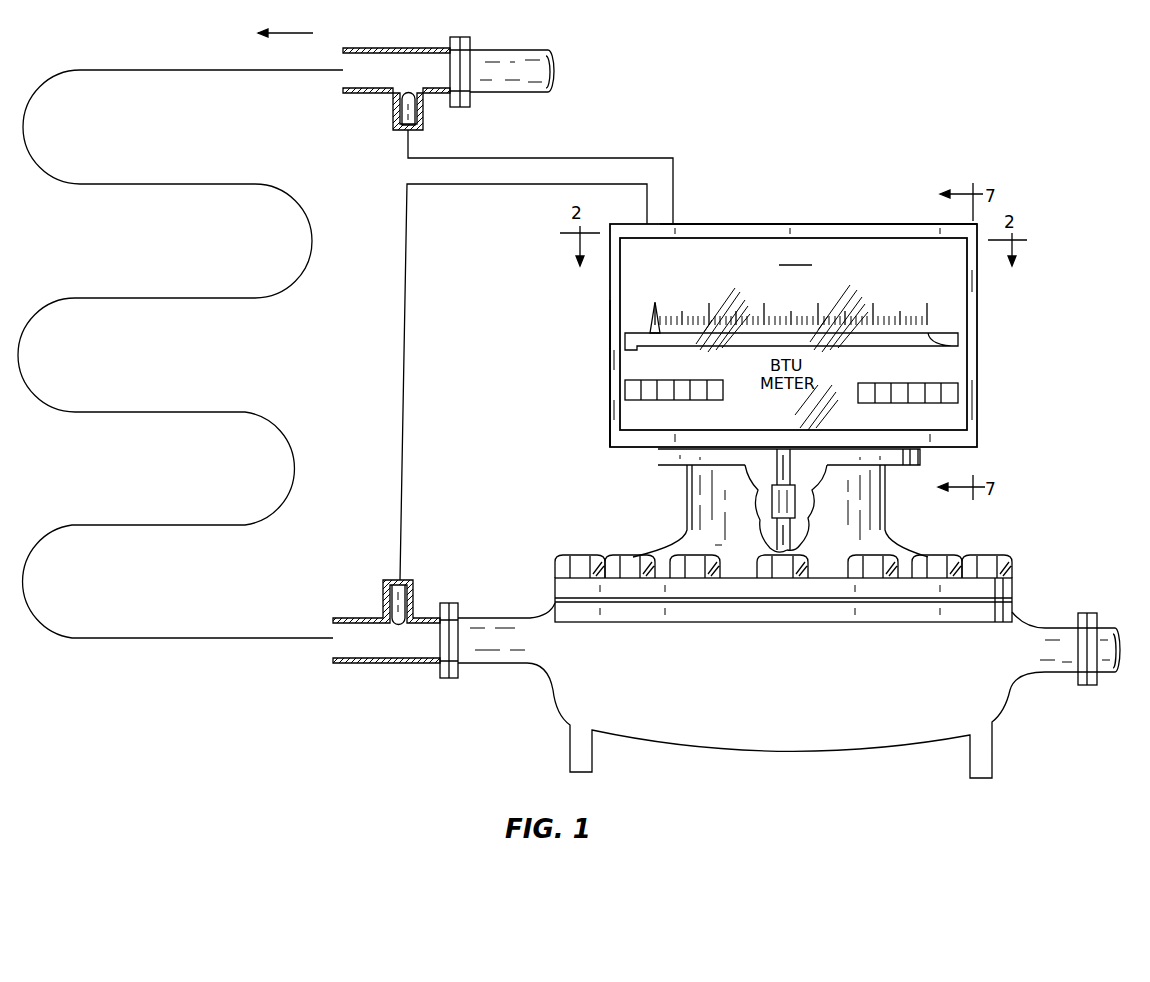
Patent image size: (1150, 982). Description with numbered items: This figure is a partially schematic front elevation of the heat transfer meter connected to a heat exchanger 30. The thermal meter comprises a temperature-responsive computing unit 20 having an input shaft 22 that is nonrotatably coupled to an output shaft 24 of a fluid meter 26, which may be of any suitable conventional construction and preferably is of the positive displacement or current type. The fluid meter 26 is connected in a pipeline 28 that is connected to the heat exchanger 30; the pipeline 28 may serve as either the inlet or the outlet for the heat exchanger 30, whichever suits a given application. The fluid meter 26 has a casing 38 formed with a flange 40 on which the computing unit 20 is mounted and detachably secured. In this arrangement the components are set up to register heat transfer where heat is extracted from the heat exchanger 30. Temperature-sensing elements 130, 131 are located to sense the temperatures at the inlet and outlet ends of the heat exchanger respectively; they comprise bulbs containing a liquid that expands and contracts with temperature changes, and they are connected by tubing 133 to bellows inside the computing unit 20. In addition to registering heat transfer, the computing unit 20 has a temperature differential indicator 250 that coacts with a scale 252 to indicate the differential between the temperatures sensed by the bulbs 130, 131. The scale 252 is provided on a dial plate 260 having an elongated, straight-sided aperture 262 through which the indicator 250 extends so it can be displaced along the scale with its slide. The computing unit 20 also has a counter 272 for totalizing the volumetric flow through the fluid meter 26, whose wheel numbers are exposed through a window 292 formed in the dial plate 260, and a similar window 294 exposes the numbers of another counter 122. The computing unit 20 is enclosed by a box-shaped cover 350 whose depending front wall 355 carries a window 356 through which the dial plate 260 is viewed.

The temperature-responsive computing unit 20 is at (979, 285).
The input shaft 22 is at (793, 463).
The output shaft 24 is at (798, 536).
The fluid meter 26 is at (914, 551).
The pipeline 28 is at (1100, 628).
The heat exchanger 30 is at (138, 298).
The casing 38 is at (668, 547).
The flange 40 is at (662, 459).
The counter 122 is at (942, 386).
The temperature-sensing element 130 is at (403, 112).
The temperature-sensing element 131 is at (390, 600).
The tubing 133 is at (518, 160).
The temperature differential indicator 250 is at (647, 332).
The scale 252 is at (930, 311).
The dial plate 260 is at (788, 337).
The aperture 262 is at (935, 340).
The counter 272 is at (680, 401).
The window 292 is at (720, 390).
The window 294 is at (906, 400).
The cover 350 is at (815, 225).
The front wall 355 is at (611, 405).
The window 356 is at (732, 239).